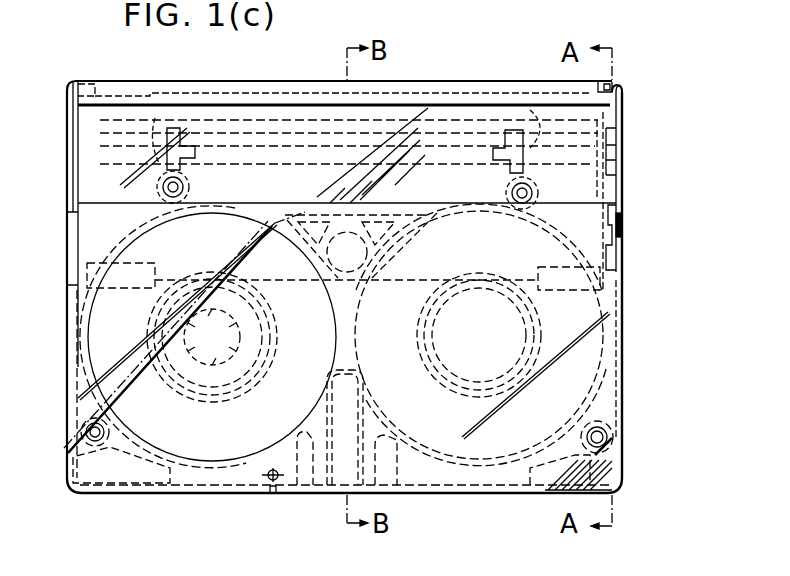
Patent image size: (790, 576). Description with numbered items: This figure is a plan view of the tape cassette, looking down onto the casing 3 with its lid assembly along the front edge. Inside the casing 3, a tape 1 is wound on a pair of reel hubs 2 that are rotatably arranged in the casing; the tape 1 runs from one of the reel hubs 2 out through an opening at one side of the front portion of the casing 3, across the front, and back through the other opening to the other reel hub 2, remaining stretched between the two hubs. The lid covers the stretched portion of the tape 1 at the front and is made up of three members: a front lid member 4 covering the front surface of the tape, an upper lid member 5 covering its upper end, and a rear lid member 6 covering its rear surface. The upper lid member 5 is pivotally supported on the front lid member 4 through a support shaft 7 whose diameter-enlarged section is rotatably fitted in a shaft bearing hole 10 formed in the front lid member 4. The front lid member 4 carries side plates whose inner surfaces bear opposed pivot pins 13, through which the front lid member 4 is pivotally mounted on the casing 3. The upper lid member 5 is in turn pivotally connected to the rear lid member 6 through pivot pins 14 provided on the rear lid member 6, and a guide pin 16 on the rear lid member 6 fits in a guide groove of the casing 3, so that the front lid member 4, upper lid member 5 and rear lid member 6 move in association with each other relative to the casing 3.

The tape 1 is at (593, 392).
The reel hubs 2 is at (222, 378).
The casing 3 is at (67, 365).
The front lid member 4 is at (228, 82).
The upper lid member 5 is at (447, 128).
The rear lid member 6 is at (368, 122).
The support shaft 7 is at (628, 100).
The shaft bearing hole 10 is at (612, 88).
The pivot pins 13 is at (622, 165).
The pivot pins 14 is at (546, 192).
The guide pin 16 is at (543, 140).